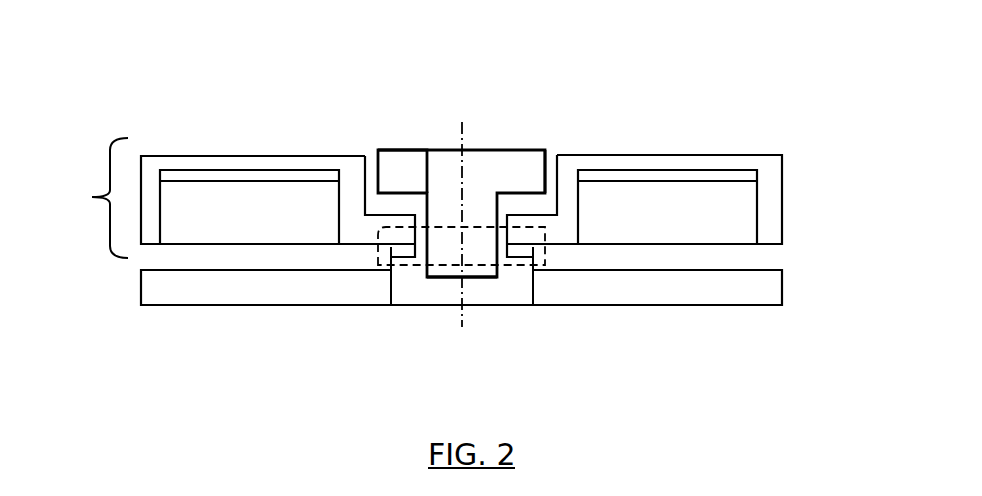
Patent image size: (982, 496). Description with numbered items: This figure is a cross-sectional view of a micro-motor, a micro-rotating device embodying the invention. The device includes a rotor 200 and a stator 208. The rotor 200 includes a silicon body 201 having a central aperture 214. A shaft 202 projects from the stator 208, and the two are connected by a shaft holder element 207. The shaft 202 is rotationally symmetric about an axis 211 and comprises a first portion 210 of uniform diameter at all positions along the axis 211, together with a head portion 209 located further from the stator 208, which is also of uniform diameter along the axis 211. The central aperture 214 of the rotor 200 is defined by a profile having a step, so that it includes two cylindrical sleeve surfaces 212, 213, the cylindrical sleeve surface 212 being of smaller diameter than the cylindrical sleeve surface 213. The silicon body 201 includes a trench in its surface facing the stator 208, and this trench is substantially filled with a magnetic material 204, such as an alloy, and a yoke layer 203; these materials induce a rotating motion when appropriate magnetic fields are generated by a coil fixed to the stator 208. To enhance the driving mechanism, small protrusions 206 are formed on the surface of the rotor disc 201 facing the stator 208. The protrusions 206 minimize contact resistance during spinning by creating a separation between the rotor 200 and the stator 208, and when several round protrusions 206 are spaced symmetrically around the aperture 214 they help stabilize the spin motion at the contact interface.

The rotor 200 is at (83, 198).
The silicon body 201 is at (357, 180).
The shaft 202 is at (473, 172).
The yoke layer 203 is at (675, 175).
The magnetic material 204 is at (700, 214).
The protrusions 206 is at (391, 267).
The shaft holder element 207 is at (510, 277).
The stator 208 is at (687, 275).
The head portion 209 is at (425, 158).
The first portion 210 is at (450, 248).
The axis 211 is at (462, 133).
The cylindrical sleeve surface 212 is at (507, 225).
The cylindrical sleeve surface 213 is at (558, 180).
The central aperture 214 is at (552, 155).